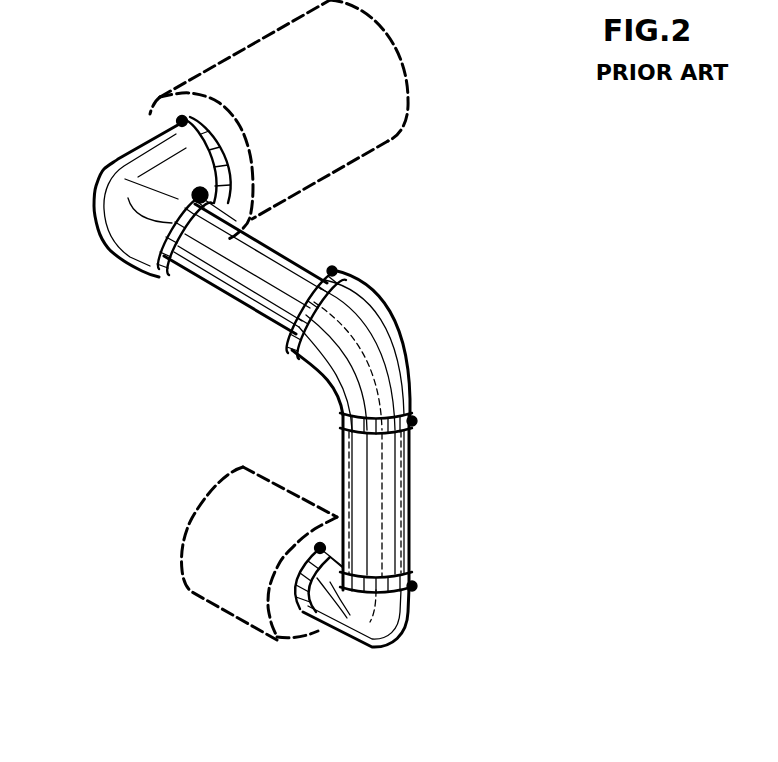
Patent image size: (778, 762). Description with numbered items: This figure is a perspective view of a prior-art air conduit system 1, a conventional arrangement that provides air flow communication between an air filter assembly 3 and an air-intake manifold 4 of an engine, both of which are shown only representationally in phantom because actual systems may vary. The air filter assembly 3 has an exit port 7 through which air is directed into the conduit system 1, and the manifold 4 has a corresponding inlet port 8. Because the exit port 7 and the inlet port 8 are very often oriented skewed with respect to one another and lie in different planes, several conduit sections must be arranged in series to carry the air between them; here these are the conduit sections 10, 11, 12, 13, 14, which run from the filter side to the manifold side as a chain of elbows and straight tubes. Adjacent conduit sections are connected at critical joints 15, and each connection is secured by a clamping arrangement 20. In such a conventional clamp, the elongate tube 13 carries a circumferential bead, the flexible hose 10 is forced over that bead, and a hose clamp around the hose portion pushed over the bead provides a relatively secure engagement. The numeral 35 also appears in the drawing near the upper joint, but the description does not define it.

The conduit system 1 is at (375, 283).
The air filter assembly 3 is at (253, 38).
The air-intake manifold 4 is at (292, 488).
The exit port 7 is at (181, 122).
The inlet port 8 is at (300, 610).
The conduit section (hose) 10 is at (94, 210).
The conduit section 11 is at (403, 337).
The conduit section 12 is at (390, 643).
The conduit section (elongate tube) 13 is at (257, 325).
The conduit section 14 is at (410, 495).
The joints 15 is at (422, 410).
The clamping arrangement 20 is at (231, 189).
The hose connection joint 35 is at (237, 200).